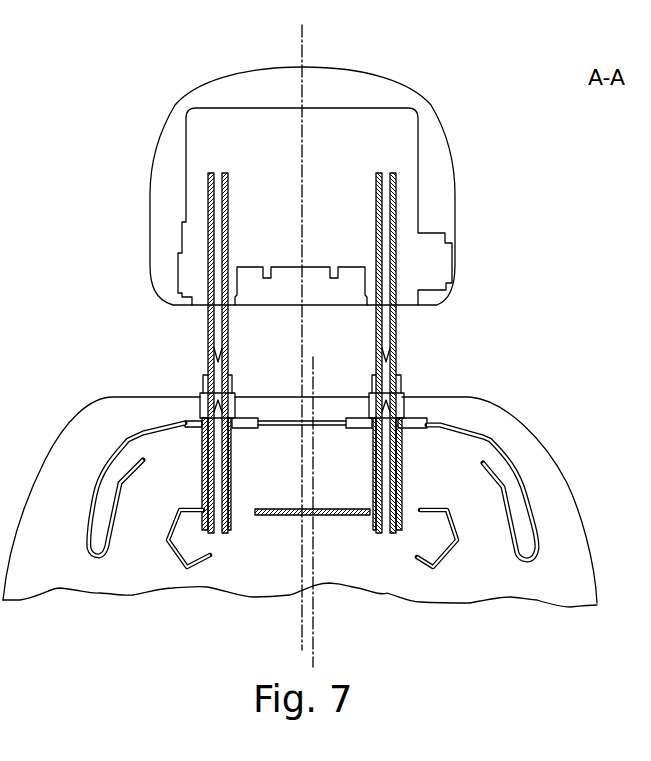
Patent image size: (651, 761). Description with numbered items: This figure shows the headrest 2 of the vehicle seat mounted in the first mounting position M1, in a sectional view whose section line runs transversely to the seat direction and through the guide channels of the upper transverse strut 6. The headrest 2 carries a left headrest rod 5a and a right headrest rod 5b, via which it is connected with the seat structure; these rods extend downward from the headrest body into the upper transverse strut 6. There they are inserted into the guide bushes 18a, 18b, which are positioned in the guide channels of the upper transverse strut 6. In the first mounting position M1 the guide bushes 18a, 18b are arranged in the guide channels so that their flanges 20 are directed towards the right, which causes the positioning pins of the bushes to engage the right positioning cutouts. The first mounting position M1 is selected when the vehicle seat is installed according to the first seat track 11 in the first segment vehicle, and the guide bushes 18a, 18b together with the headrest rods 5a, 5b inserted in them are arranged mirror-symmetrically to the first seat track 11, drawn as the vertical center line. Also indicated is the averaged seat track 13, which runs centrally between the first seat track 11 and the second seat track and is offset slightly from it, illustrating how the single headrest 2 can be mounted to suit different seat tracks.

The first seat track 11 is at (303, 50).
The headrest 2 is at (336, 156).
The first mounting position M1 is at (420, 66).
The left headrest rod 5a is at (213, 330).
The right headrest rod 5b is at (392, 323).
The averaged seat track 13 is at (314, 368).
The flanges 20 is at (236, 418).
The upper transverse strut 6 is at (570, 413).
The guide bush 18a is at (201, 472).
The guide bush 18b is at (400, 455).